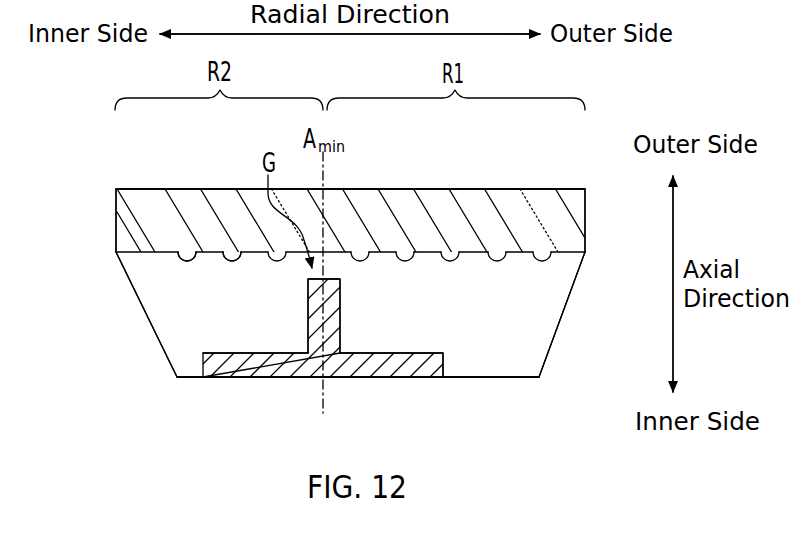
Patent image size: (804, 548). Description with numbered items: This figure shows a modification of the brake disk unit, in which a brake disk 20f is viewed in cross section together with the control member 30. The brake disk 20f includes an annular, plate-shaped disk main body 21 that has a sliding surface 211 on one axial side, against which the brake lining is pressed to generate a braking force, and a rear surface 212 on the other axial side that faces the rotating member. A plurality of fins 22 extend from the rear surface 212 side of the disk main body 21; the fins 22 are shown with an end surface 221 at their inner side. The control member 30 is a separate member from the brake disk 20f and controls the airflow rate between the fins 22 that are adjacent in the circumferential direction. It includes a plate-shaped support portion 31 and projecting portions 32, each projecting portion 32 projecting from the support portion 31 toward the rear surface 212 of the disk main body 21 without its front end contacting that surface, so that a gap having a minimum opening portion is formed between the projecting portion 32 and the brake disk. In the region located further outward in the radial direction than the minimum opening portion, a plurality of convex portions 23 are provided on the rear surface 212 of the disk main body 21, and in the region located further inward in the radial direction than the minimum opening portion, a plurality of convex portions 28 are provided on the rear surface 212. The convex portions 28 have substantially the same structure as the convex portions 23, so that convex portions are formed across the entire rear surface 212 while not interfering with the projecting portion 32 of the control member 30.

The brake disk 20f is at (123, 169).
The disk main body 21 is at (506, 179).
The sliding surface 211 is at (204, 189).
The rear surface 212 is at (255, 253).
The fin 22 is at (537, 387).
The inner end surface 221 is at (502, 378).
The convex portion 23 is at (542, 262).
The convex portion 28 is at (186, 262).
The control member 30 is at (215, 387).
The support portion 31 is at (406, 378).
The projecting portion 32 is at (308, 300).